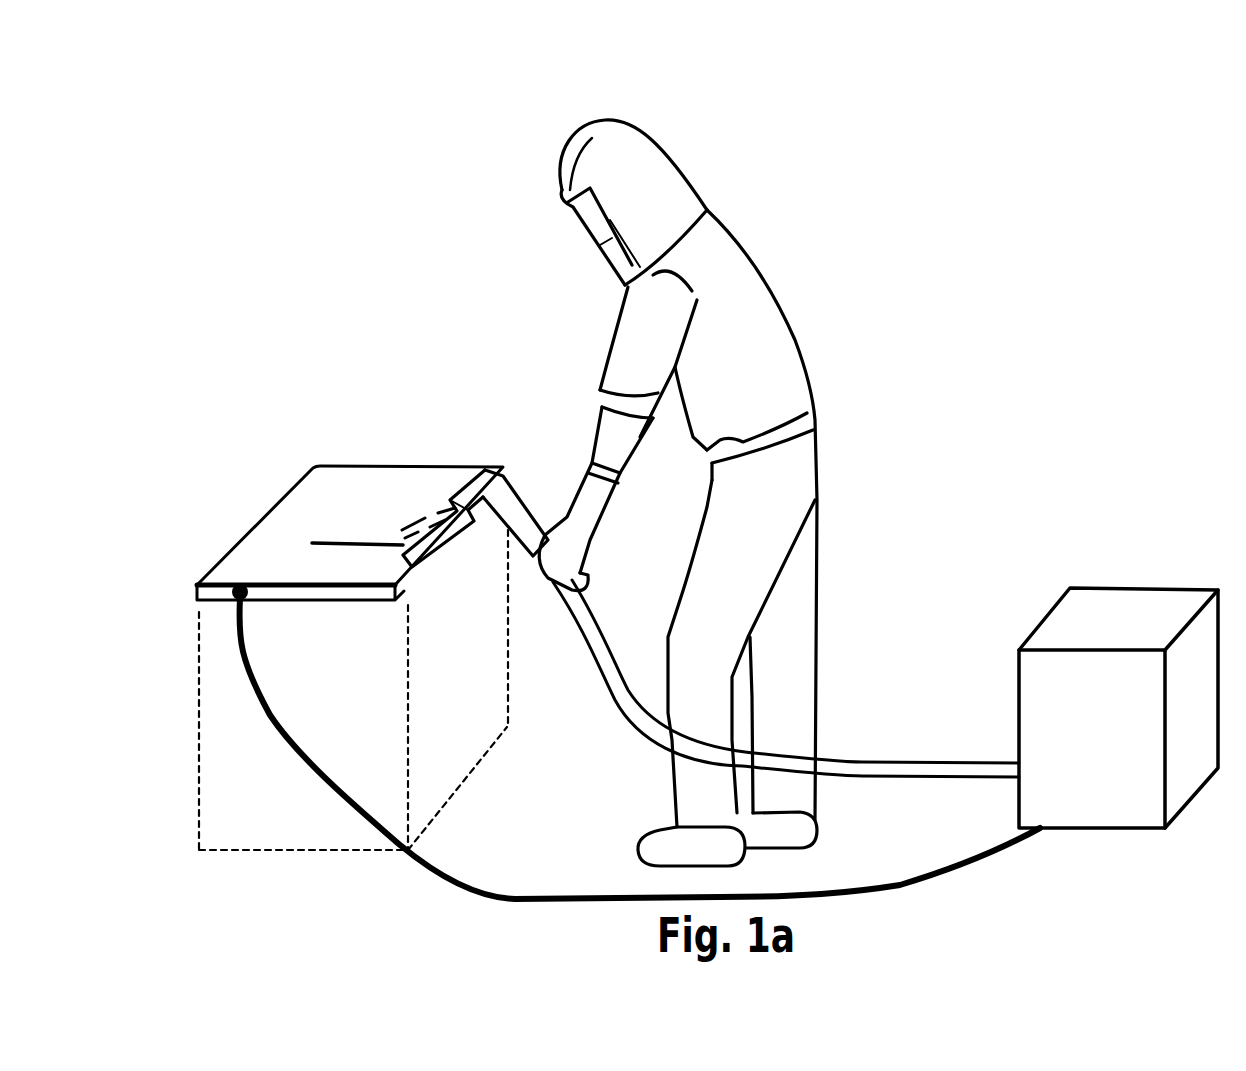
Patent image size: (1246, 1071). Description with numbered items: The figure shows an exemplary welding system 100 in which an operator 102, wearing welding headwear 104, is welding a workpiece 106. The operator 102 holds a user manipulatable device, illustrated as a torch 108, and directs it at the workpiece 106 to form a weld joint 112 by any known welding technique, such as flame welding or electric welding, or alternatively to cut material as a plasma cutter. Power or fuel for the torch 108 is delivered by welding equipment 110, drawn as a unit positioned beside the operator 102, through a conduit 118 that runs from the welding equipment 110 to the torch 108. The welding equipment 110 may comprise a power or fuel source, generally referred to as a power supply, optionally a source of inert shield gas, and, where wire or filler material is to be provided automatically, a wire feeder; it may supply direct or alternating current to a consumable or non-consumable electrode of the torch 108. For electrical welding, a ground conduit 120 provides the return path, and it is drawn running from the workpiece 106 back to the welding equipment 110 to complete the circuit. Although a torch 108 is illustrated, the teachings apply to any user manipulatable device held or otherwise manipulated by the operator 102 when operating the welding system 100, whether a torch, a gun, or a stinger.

The welding system 100 is at (1207, 63).
The operator 102 is at (780, 303).
The welding headwear 104 is at (680, 168).
The workpiece 106 is at (315, 503).
The torch 108 is at (520, 515).
The weld joint 112 is at (400, 532).
The welding equipment 110 is at (1050, 605).
The conduit 118 is at (873, 760).
The ground conduit 120 is at (493, 893).